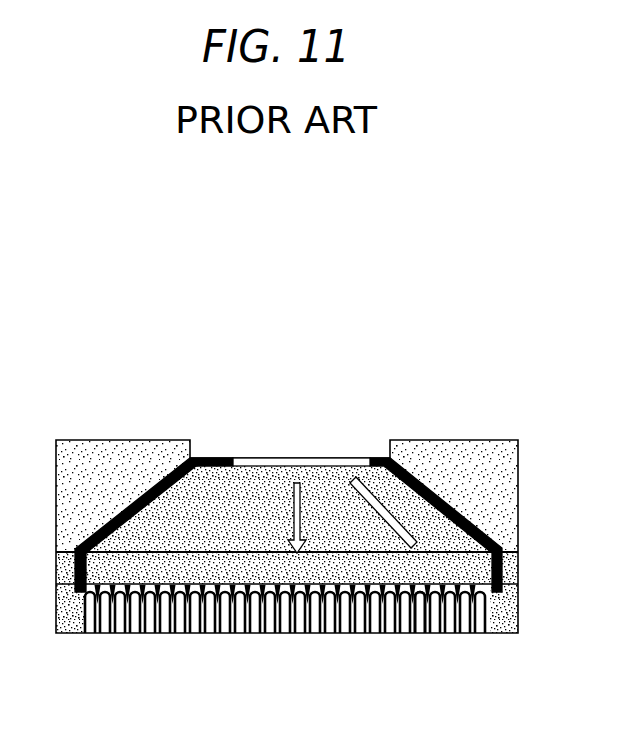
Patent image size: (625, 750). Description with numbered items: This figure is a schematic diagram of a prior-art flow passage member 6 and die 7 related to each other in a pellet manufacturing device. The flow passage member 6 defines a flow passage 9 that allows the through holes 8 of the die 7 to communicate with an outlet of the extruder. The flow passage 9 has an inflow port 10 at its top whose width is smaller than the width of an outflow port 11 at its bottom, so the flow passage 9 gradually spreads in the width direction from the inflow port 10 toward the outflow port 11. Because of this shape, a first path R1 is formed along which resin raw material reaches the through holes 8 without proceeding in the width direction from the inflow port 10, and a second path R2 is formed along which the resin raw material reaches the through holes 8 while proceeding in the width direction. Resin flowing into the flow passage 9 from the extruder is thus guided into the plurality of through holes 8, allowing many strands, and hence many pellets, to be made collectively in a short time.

The flow passage member 6 is at (526, 441).
The die 7 is at (526, 585).
The through holes 8 is at (423, 590).
The flow passage 9 is at (180, 478).
The inflow port 10 is at (302, 458).
The outflow port 11 is at (82, 542).
The first path R1 is at (295, 553).
The second path R2 is at (388, 518).